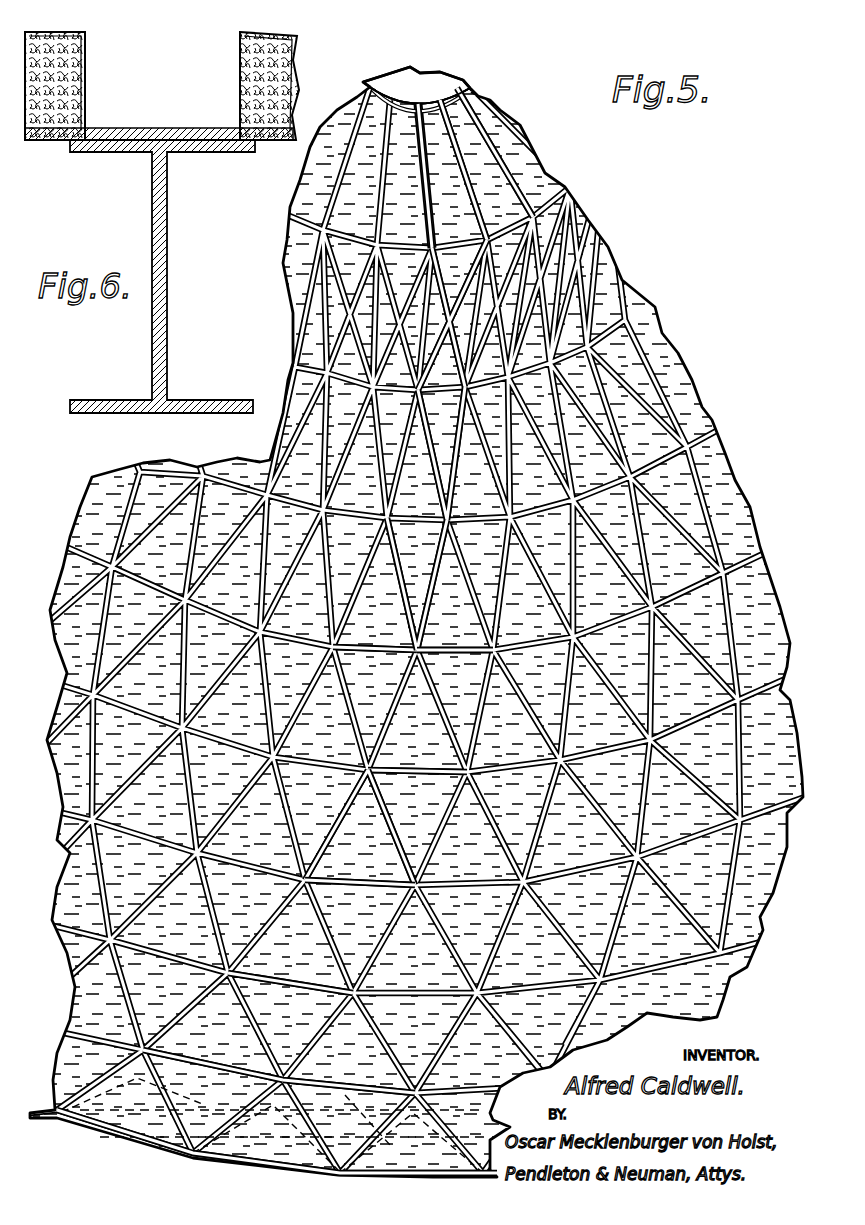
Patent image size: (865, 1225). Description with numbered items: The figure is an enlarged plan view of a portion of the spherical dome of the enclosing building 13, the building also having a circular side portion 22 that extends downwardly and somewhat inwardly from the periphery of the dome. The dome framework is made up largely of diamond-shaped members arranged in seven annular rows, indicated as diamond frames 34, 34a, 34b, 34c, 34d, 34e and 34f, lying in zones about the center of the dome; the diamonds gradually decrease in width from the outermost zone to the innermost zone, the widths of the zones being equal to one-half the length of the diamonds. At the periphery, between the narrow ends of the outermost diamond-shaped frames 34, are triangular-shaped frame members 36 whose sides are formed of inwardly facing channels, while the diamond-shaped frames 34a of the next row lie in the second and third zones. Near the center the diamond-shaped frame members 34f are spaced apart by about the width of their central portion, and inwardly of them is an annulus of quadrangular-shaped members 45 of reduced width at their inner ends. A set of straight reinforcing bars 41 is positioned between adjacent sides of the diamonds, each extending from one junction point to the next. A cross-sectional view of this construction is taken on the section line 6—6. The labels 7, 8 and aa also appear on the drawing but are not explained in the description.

The circular side portion 22 is at (685, 393).
The straight reinforcing bars 41 is at (478, 10).
The enclosing building 13 is at (420, 72).
The quadrangular-shaped members 45 is at (485, 154).
The section line 6— 6 is at (405, 90).
The section line 8- 8 is at (454, 187).
The panel aa is at (452, 315).
The diamond-shaped frame members 34f is at (441, 453).
The diamond-shaped frame members 34e is at (417, 584).
The diamond frames 34d is at (455, 632).
The diamond frames 34c is at (417, 756).
The section line 7- 7 is at (313, 835).
The diamond frames 34b is at (360, 868).
The diamond-shaped frames 34a is at (290, 971).
The diamond-shaped frames 34 is at (130, 1147).
The triangular-shaped frame members 36 is at (220, 1140).